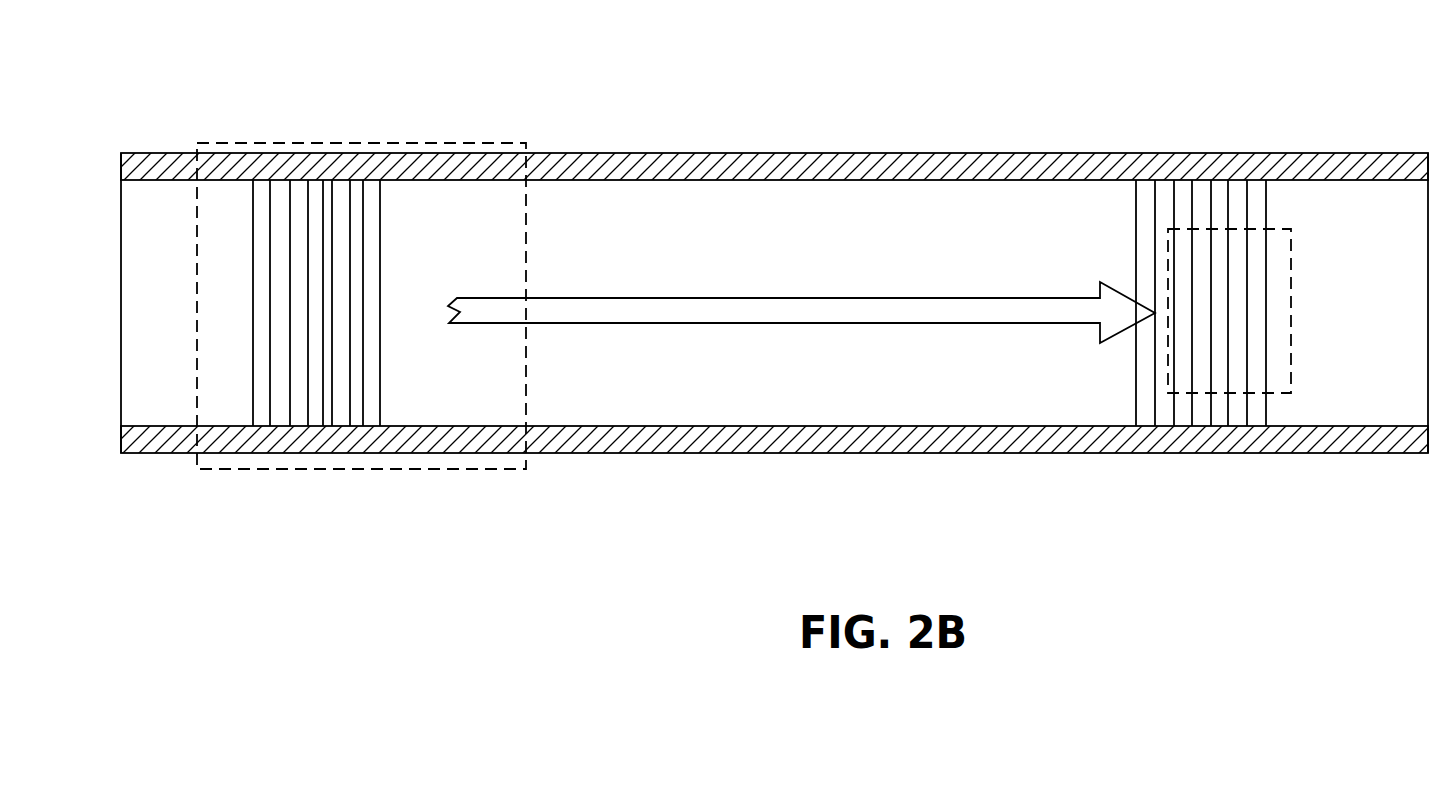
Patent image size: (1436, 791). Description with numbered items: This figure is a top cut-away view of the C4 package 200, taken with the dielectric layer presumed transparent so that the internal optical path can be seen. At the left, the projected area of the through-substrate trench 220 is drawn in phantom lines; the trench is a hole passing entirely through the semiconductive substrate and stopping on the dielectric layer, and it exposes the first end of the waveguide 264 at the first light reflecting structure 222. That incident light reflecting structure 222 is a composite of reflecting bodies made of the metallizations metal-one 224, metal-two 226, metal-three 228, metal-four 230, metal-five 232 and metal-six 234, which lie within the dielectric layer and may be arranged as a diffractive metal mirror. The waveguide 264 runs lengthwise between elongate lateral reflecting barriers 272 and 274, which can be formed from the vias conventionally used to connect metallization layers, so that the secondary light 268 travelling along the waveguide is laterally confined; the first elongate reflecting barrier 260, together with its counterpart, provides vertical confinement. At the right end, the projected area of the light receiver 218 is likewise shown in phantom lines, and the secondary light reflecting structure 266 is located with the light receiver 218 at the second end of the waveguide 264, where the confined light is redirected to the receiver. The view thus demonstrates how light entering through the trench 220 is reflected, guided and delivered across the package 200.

The C4 package 200 is at (1251, 69).
The light receiver 218 is at (1292, 273).
The through-substrate trench 220 is at (526, 228).
The first light reflecting structure 222 is at (225, 233).
The metal-1 (M1) 224 is at (281, 183).
The M2 226 is at (303, 183).
The M3 228 is at (322, 183).
The M4 230 is at (332, 183).
The M5 232 is at (352, 183).
The M6 234 is at (377, 183).
The first elongate reflecting barrier 260 is at (267, 183).
The waveguide 264 is at (636, 485).
The secondary light reflecting structure 266 is at (1292, 345).
The secondary light 268 is at (738, 320).
The elongate lateral reflecting barrier 272 is at (796, 153).
The elongate lateral reflecting barrier 274 is at (735, 453).